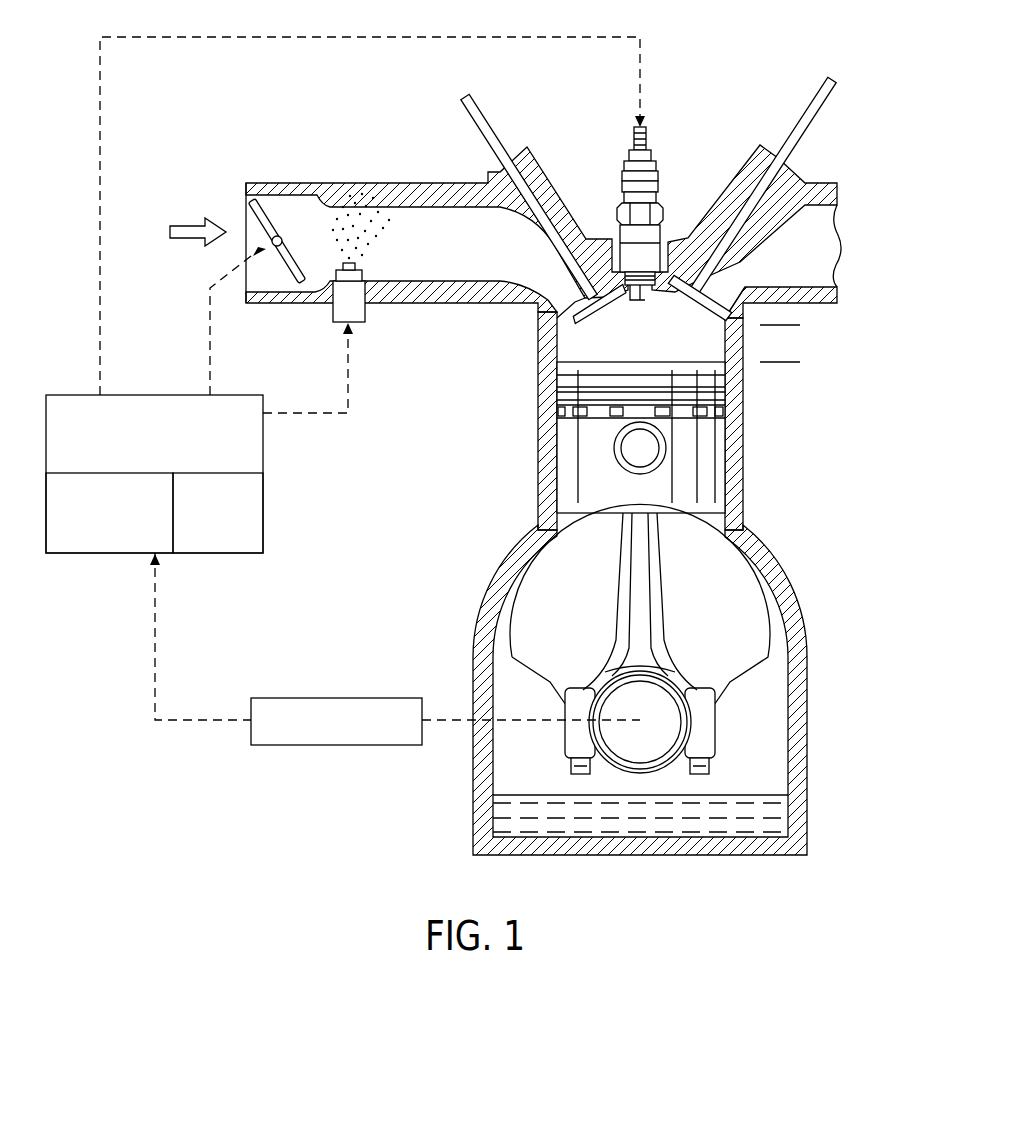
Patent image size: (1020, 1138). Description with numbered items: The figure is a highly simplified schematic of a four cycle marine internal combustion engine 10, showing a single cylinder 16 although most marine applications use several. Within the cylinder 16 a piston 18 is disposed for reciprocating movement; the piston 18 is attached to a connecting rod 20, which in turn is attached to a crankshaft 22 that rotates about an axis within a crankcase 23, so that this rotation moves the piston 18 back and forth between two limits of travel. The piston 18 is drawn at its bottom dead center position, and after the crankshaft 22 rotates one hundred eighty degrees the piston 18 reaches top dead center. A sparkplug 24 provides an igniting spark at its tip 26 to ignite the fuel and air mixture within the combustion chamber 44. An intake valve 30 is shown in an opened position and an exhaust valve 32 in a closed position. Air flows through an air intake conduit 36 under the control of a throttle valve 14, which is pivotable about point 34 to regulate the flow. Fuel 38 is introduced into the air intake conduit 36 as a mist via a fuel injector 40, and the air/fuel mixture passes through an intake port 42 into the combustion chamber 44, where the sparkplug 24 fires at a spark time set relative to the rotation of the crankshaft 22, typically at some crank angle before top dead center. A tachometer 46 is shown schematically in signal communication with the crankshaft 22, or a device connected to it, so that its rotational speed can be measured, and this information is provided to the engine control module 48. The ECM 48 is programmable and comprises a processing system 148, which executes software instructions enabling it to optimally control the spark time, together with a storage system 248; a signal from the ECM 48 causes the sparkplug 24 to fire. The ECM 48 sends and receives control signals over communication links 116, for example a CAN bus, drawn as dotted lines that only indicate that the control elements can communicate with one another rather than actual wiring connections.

The marine internal combustion engine 10 is at (760, 48).
The throttle valve 14 is at (292, 268).
The cylinder 16 is at (565, 342).
The piston 18 is at (705, 455).
The connecting rod 20 is at (641, 588).
The crankshaft 22 is at (660, 727).
The crankcase 23 is at (762, 700).
The sparkplug 24 is at (658, 197).
The tip 26 is at (650, 300).
The intake valve 30 is at (484, 123).
The exhaust valve 32 is at (802, 128).
The pivot point 34 is at (276, 236).
The air intake conduit 36 is at (481, 250).
The fuel 38 is at (362, 233).
The fuel injector 40 is at (360, 326).
The intake port 42 is at (540, 310).
The combustion chamber 44 is at (682, 352).
The tachometer 46 is at (340, 746).
The engine control module (ECM) 48 is at (263, 442).
The communication link 116 is at (210, 340).
The processing system 148 is at (105, 554).
The storage system 248 is at (263, 520).